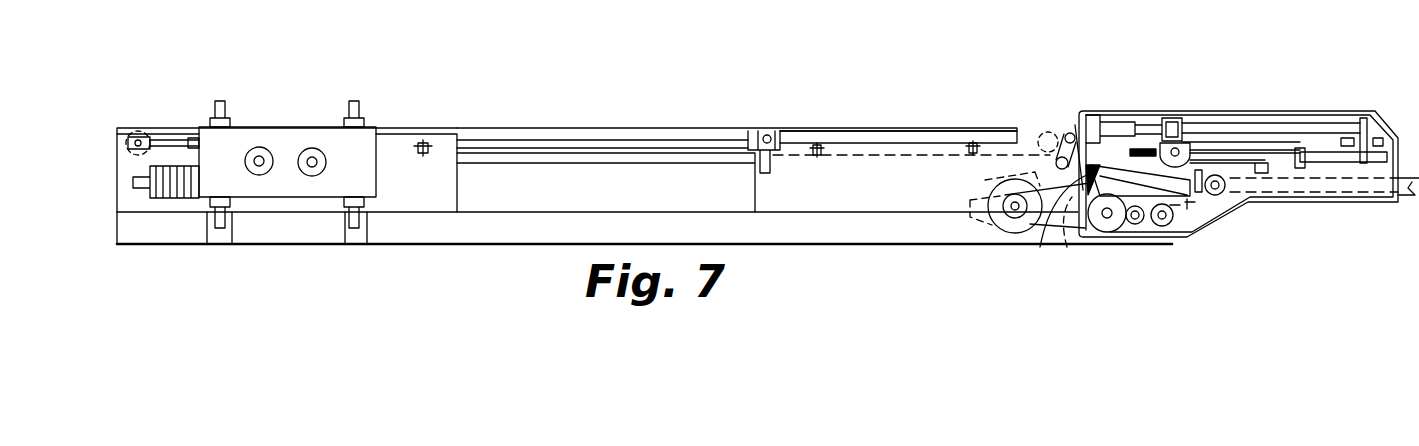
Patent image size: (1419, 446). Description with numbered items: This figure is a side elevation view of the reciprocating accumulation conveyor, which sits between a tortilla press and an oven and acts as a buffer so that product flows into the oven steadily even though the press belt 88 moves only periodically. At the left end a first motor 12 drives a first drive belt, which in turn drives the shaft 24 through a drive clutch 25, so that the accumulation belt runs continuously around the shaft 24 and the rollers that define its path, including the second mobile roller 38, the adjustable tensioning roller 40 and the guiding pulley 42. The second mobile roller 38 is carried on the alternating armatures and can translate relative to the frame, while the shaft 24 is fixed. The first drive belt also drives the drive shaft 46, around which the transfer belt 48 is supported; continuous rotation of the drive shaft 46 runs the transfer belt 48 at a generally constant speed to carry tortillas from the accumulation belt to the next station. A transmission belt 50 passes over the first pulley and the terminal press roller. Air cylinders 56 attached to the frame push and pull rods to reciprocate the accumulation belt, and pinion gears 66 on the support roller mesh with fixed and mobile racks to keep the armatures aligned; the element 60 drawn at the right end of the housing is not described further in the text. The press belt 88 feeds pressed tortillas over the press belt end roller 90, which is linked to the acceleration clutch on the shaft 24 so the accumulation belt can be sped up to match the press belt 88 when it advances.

The first motor 12 is at (998, 227).
The shaft 24 is at (1110, 222).
The drive clutch 25 is at (1101, 228).
The second mobile roller 38 is at (1063, 227).
The adjustable tensioning roller 40 is at (1203, 230).
The guiding pulley 42 is at (1134, 228).
The drive shaft 46 is at (1222, 196).
The transfer belt 48 is at (1285, 180).
The transmission belt 50 is at (1077, 200).
The air cylinder 56 is at (1322, 148).
The rod 60 is at (1362, 165).
The pinion gear 66 is at (1185, 145).
The press belt 88 is at (1022, 142).
The press belt end roller 90 is at (1070, 135).